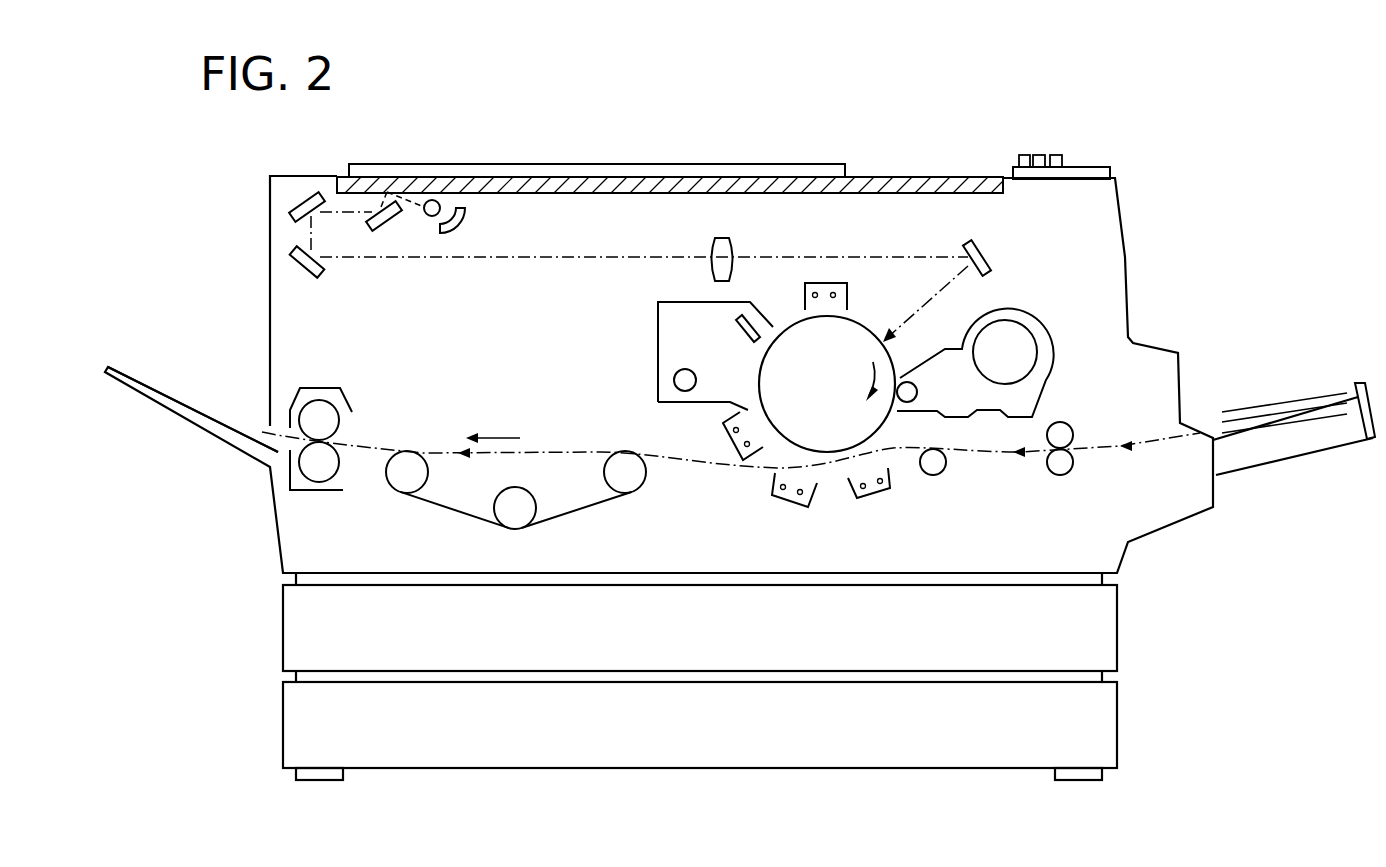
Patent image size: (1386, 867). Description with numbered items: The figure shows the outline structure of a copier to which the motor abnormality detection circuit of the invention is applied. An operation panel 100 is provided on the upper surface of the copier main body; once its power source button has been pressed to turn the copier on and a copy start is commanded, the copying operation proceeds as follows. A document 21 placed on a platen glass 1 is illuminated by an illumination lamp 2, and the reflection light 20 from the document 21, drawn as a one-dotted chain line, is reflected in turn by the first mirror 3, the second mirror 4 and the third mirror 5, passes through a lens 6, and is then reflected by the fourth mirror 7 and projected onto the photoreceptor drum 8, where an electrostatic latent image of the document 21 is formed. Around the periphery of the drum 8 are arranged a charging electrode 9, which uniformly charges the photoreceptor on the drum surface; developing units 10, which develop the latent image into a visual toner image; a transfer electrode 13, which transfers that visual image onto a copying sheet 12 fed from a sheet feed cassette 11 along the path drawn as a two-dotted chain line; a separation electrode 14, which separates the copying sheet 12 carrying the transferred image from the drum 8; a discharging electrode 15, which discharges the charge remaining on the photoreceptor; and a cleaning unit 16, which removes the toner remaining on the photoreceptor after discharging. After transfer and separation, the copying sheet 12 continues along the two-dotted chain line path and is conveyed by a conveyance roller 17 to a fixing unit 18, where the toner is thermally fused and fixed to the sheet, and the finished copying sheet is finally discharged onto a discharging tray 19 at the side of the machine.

The platen glass 1 is at (860, 180).
The illumination lamp 2 is at (458, 208).
The first mirror 3 is at (380, 233).
The second mirror 4 is at (300, 207).
The third mirror 5 is at (297, 262).
The lens 6 is at (716, 250).
The fourth mirror 7 is at (985, 248).
The photoreceptor drum 8 is at (850, 323).
The charging electrode 9 is at (825, 283).
The developing unit 10 is at (1030, 320).
The sheet feed cassette 11 is at (1293, 445).
The copying sheet 12 is at (1263, 413).
The transfer electrode 13 is at (873, 493).
The separation charger 14 is at (775, 498).
The discharging electrode 15 is at (723, 423).
The cleaning unit 16 is at (660, 330).
The conveyance roller 17 is at (450, 493).
The fixing unit 18 is at (320, 390).
The discharging tray 19 is at (192, 412).
The reflection light 20 is at (472, 262).
The document 21 is at (587, 172).
The operation panel 100 is at (1093, 170).